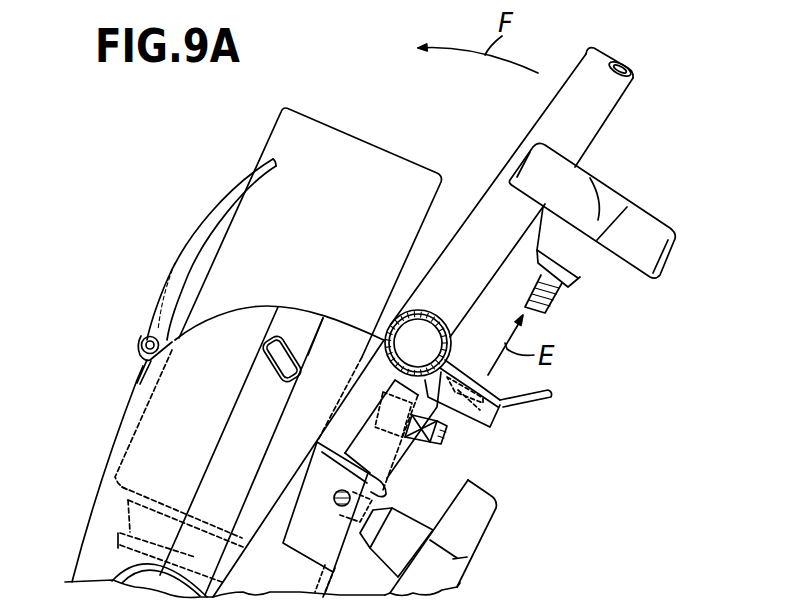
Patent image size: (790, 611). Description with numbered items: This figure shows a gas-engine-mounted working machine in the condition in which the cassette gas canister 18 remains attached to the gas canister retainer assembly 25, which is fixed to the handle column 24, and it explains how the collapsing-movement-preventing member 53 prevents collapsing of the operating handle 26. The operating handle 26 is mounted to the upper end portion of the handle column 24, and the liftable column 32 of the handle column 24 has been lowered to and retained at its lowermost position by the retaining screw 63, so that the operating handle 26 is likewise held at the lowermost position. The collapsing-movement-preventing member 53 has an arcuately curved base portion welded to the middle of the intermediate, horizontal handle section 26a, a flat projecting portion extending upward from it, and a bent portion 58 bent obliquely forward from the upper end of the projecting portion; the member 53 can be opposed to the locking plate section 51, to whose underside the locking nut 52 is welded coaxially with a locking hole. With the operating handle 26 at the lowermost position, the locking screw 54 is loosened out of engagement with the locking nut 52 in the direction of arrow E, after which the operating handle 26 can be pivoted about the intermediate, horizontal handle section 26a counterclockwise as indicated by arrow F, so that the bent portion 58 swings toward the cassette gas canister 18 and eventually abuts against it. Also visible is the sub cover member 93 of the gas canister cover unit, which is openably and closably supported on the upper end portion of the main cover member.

The cassette gas canister 18 is at (337, 143).
The sub cover member 93 is at (180, 235).
The gas canister retainer assembly 25 is at (117, 422).
The liftable column 32 is at (332, 427).
The operating handle 26 is at (600, 110).
The intermediate, horizontal handle section 26a is at (400, 317).
The locking screw 54 is at (643, 217).
The collapsing-movement-preventing member 53 is at (472, 365).
The locking plate section 51 is at (504, 412).
The bent portion 58 is at (537, 386).
The locking nut 52 is at (487, 418).
The handle column 24 is at (438, 468).
The retaining screw 63 is at (477, 545).